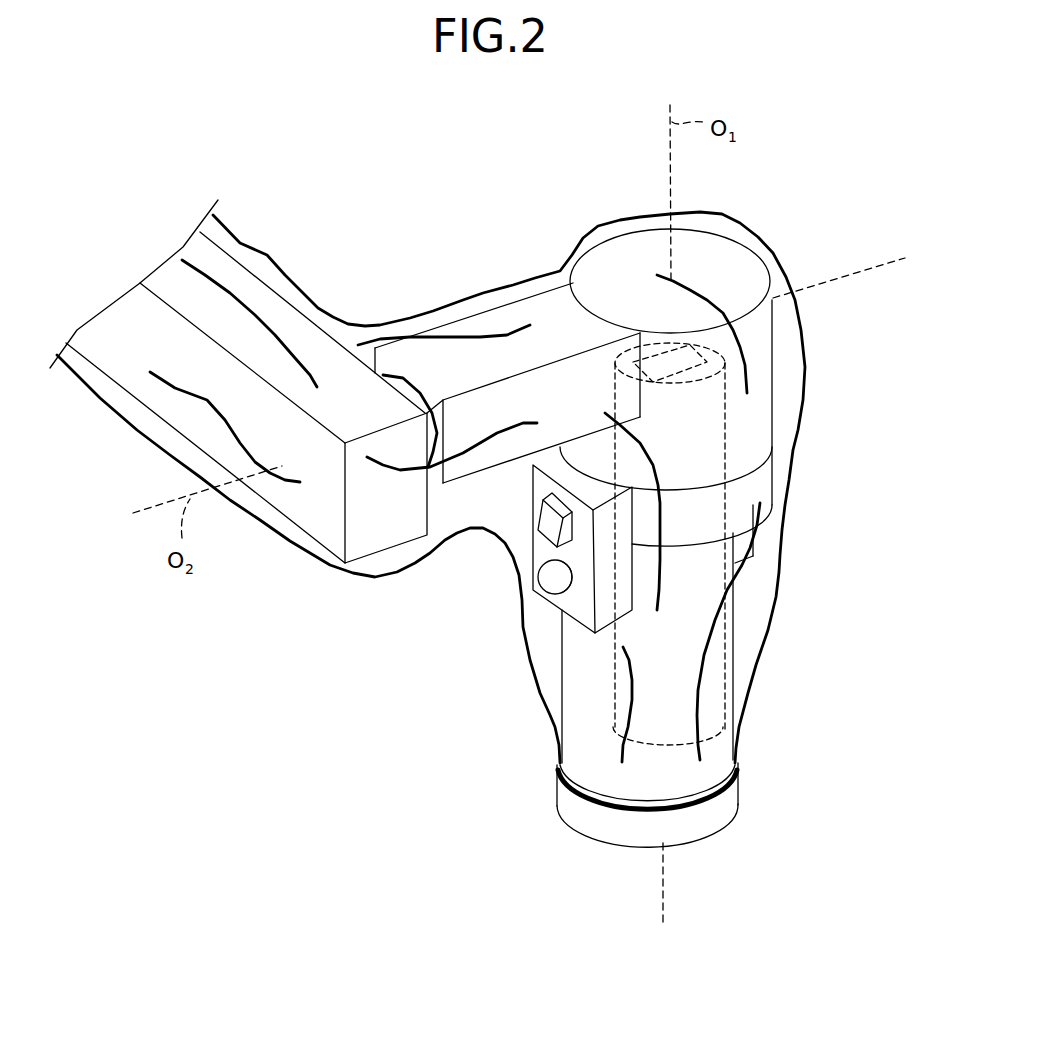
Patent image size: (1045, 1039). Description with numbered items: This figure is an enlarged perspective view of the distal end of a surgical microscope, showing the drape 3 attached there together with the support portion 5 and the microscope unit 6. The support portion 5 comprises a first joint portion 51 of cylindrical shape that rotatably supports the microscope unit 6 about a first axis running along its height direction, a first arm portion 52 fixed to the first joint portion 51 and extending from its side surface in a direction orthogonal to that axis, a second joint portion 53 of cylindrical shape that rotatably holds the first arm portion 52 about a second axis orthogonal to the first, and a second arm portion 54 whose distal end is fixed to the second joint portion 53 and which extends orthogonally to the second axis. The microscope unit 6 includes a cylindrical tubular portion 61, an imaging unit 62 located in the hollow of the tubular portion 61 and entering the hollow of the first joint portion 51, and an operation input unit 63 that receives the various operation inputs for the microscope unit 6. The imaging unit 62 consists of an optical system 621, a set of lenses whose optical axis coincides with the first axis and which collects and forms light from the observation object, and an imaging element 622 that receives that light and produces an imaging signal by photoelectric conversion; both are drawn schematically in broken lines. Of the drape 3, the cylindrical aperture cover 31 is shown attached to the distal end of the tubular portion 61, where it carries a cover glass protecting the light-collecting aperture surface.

The drape 3 is at (771, 252).
The support portion 5 is at (625, 268).
The first joint portion 51 is at (727, 255).
The first arm portion 52 is at (517, 310).
The second joint portion 53 is at (403, 385).
The second arm portion 54 is at (145, 388).
The microscope unit 6 is at (740, 597).
The tubular portion 61 is at (733, 655).
The imaging unit 62 is at (769, 533).
The optical system 621 is at (746, 544).
The imaging element 622 is at (883, 390).
The operation input unit 63 is at (538, 550).
The aperture cover 31 is at (727, 799).